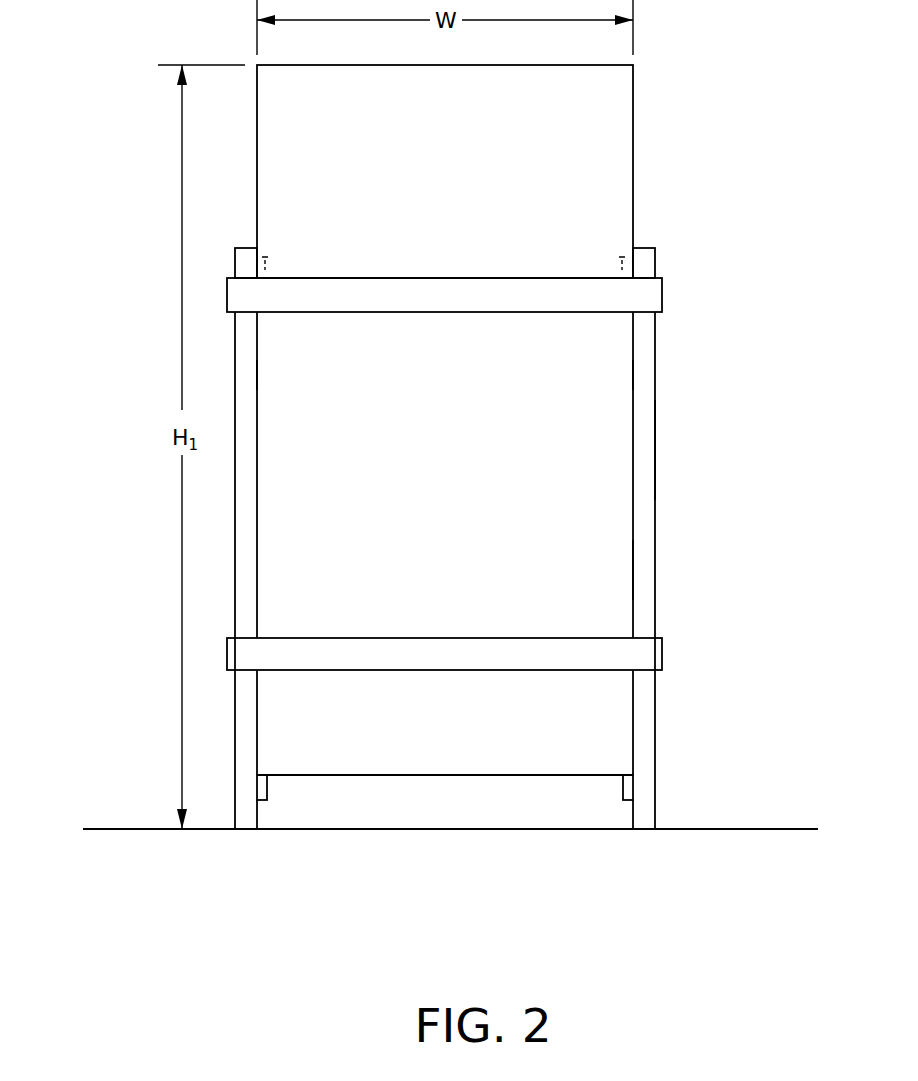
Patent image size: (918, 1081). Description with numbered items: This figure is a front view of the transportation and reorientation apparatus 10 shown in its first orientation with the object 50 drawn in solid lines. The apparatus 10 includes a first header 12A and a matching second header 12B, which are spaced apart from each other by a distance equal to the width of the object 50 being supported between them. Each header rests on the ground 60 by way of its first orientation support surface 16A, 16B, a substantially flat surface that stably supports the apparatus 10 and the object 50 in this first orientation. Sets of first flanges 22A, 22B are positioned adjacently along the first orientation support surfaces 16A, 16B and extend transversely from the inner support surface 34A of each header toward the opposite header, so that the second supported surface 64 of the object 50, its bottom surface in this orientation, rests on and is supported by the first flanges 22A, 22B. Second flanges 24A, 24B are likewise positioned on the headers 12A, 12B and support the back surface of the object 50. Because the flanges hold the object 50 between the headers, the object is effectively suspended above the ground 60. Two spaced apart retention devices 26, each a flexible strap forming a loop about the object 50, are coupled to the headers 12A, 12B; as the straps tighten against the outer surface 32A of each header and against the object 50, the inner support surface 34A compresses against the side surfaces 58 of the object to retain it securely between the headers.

The transportation and reorientation apparatus 10 is at (703, 229).
The first header 12A is at (670, 342).
The second header 12B is at (222, 521).
The first orientation support surface 16A is at (645, 829).
The first orientation support surface 16B is at (238, 829).
The first flanges 22A is at (623, 790).
The first flanges 22B is at (267, 790).
The second flanges 24A is at (624, 260).
The second flanges 24B is at (263, 268).
The retention device 26 is at (656, 296).
The outer surface 32A is at (656, 446).
The inner support surface 34A is at (633, 586).
The object 50 is at (645, 101).
The side surfaces 58 is at (257, 380).
The ground 60 is at (788, 829).
The second supported surface 64 is at (388, 776).